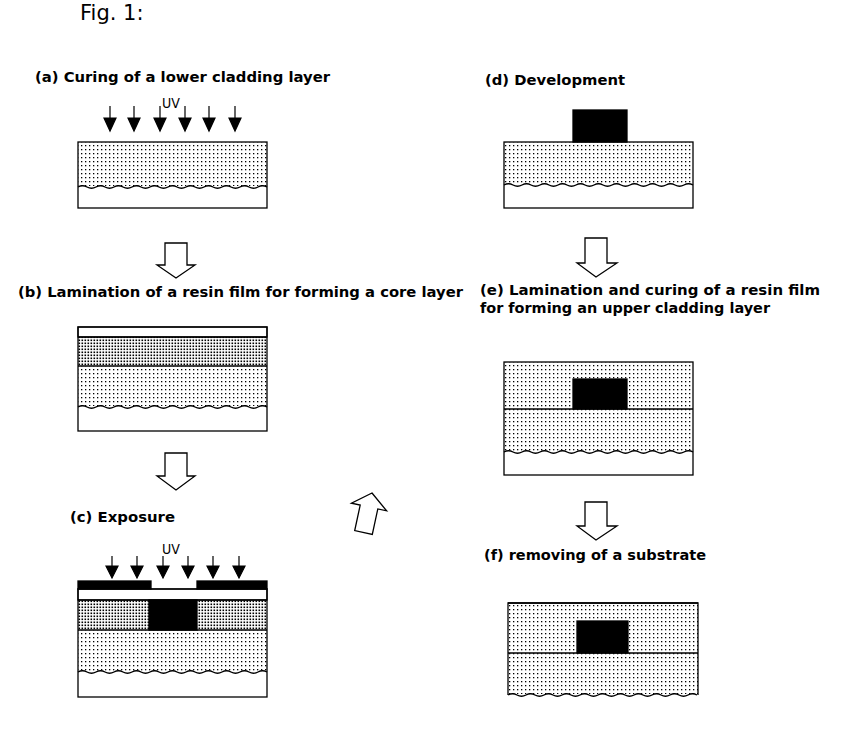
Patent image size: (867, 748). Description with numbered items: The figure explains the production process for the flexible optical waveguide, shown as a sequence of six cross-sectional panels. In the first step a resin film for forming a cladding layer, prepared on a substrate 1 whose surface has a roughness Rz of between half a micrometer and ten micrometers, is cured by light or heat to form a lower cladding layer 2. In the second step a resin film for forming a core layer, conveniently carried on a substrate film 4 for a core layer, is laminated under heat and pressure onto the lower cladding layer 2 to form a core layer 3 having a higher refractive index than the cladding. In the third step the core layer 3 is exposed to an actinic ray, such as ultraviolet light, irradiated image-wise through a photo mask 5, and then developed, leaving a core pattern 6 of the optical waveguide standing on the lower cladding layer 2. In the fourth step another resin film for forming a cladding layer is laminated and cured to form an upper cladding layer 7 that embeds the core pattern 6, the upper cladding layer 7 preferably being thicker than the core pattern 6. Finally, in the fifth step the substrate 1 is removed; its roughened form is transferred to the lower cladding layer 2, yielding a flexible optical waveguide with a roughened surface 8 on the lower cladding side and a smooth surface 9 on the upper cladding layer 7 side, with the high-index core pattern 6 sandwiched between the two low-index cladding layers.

The substrate 1 is at (720, 458).
The lower cladding layer 2 is at (720, 660).
The core layer 3 is at (305, 608).
The substrate film for a core layer 4 is at (305, 588).
The photo mask 5 is at (267, 582).
The core pattern 6 is at (725, 612).
The upper cladding layer 7 is at (725, 585).
The roughened surface 8 is at (667, 695).
The smooth surface 9 is at (657, 603).